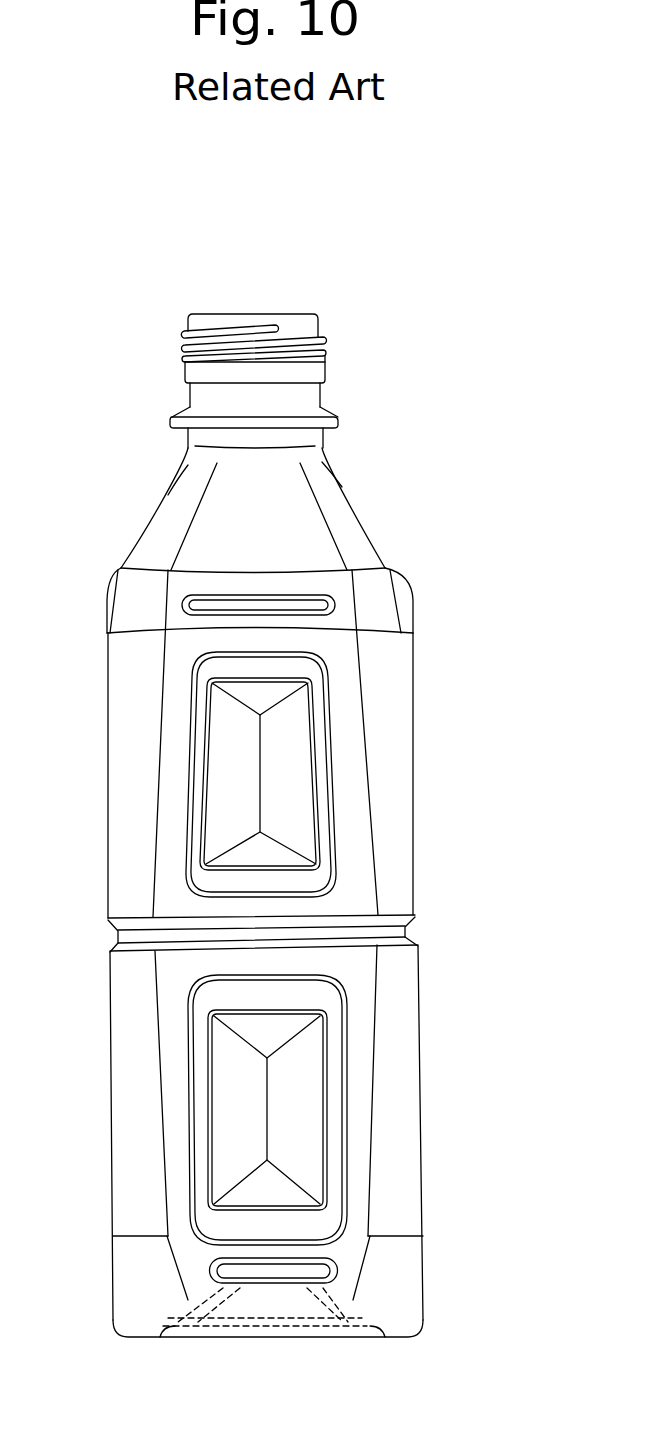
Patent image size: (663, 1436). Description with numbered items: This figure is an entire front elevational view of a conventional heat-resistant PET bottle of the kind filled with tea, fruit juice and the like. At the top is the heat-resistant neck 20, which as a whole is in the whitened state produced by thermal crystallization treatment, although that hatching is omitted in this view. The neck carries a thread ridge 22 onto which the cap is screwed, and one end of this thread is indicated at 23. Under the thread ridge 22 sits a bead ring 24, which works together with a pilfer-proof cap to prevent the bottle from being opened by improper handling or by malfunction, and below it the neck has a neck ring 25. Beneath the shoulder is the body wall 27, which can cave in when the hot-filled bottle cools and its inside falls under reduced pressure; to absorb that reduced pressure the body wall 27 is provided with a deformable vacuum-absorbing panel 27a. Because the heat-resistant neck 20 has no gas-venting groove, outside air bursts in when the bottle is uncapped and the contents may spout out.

The heat-resistant neck 20 is at (338, 282).
The thread ridge 22 is at (182, 347).
The screw thread 23 is at (267, 326).
The bead ring 24 is at (327, 363).
The neck ring 25 is at (338, 420).
The body wall 27 is at (415, 850).
The vacuum-absorbing panel 27a is at (292, 1127).